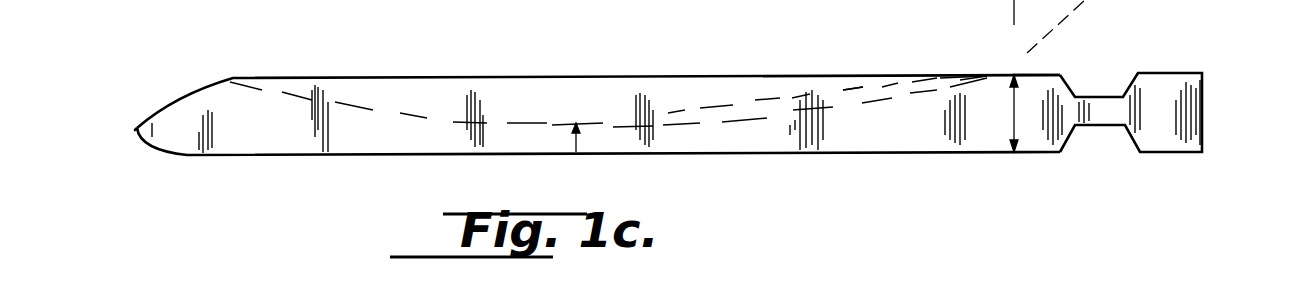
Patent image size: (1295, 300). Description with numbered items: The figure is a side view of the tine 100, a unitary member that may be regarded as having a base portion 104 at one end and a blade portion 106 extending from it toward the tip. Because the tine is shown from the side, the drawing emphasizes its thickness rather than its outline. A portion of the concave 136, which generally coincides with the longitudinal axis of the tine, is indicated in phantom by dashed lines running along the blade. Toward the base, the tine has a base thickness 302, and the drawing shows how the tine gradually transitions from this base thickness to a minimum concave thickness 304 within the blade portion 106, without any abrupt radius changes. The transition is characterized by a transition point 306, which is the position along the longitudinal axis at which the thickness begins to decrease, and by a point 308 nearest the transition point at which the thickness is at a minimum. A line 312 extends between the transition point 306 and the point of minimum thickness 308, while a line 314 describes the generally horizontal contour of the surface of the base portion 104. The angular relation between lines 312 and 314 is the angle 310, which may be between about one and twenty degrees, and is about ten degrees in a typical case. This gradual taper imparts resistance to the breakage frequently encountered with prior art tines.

The tine 100 is at (248, 58).
The base portion 104 is at (1165, 72).
The blade portion 106 is at (750, 155).
The concave 136 is at (525, 121).
The base thickness 302 is at (1018, 113).
The minimum concave thickness 304 is at (570, 135).
The transition point 306 is at (987, 75).
The point of minimum thickness 308 is at (576, 123).
The angle 310 is at (850, 90).
The line 312 is at (769, 98).
The line 314 is at (1025, 73).